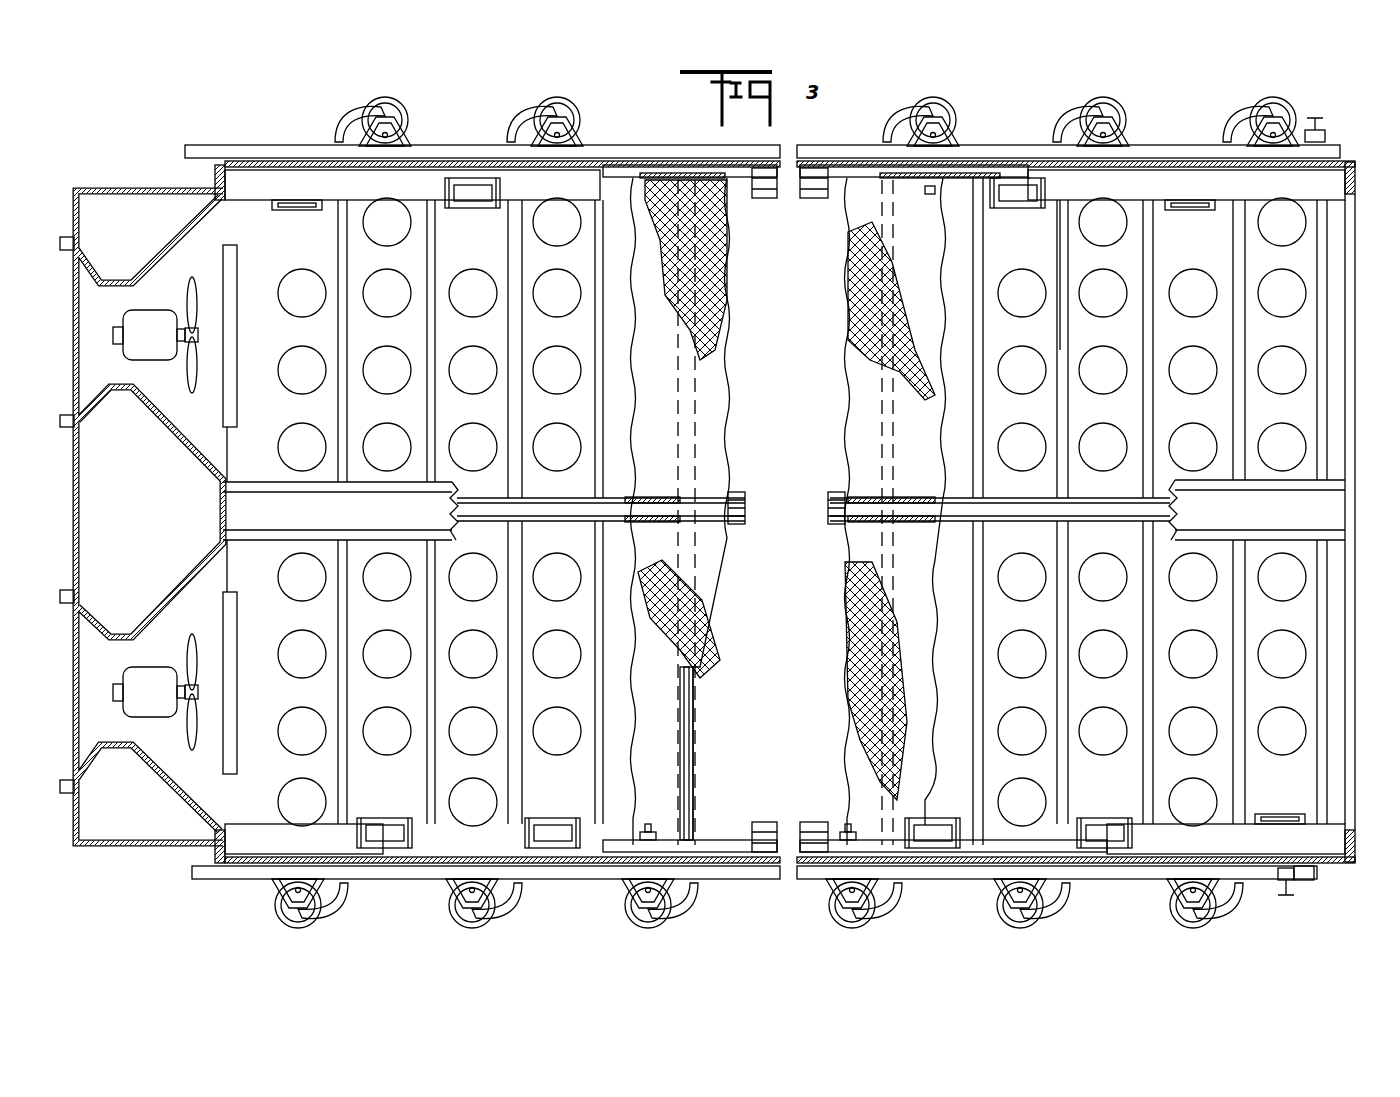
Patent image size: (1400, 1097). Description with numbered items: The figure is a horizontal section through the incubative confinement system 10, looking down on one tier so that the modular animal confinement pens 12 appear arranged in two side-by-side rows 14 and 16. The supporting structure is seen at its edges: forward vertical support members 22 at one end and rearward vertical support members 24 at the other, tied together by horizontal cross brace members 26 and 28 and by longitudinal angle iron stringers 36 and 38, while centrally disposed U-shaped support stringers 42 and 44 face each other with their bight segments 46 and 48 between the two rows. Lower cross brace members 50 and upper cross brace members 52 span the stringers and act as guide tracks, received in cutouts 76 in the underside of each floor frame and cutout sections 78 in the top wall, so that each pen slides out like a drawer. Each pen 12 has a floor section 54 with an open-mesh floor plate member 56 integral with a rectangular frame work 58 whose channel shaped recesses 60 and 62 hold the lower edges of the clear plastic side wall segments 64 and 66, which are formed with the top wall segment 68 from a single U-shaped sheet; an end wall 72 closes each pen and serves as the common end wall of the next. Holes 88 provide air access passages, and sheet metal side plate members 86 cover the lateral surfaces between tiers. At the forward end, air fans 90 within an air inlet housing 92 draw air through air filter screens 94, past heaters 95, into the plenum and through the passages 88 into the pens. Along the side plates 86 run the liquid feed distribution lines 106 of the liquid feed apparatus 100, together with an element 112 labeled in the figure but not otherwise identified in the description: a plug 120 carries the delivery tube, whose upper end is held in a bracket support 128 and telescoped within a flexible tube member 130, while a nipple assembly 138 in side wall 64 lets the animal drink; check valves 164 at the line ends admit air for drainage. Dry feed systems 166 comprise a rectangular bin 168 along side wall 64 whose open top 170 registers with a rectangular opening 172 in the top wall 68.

The incubative confinement system 10 is at (136, 108).
The modular animal confinement pen 12 is at (667, 426).
The side-by-side row 14 is at (1360, 631).
The side-by-side row 16 is at (1360, 332).
The forward vertical support member 22 is at (240, 165).
The rearward vertical support member 24 is at (1356, 162).
The cross brace member 26 is at (215, 460).
The cross brace member 28 is at (1346, 540).
The angle iron stringer 36 is at (770, 182).
The angle iron stringer 38 is at (250, 190).
The U-shaped support stringer 42 is at (803, 476).
The U-shaped support stringer 44 is at (460, 485).
The bight segment 46 is at (752, 510).
The bight segment 48 is at (235, 512).
The lower cross brace member 50 is at (692, 718).
The upper cross brace member 52 is at (345, 350).
The floor section 54 is at (830, 380).
The floor plate member 56 is at (848, 292).
The frame work 58 is at (750, 198).
The channel shaped recess 60 is at (786, 209).
The channel shaped recess 62 is at (785, 512).
The side wall segment 64 is at (680, 173).
The side wall segment 66 is at (655, 496).
The top wall segment 68 is at (312, 538).
The end wall 72 is at (428, 352).
The cutout 76 is at (757, 662).
The cutout section 78 is at (512, 400).
The side plate member 86 is at (598, 145).
The air access passage 88 is at (385, 230).
The air fan 90 is at (183, 362).
The air inlet housing 92 is at (170, 240).
The air filter screen 94 is at (80, 345).
The heater 95 is at (224, 385).
The liquid feed apparatus 100 is at (517, 102).
The distribution line 106 is at (776, 146).
The wheel 112 is at (378, 100).
The plug 120 is at (400, 124).
The bracket support 128 is at (1175, 895).
The flexible tube member 130 is at (340, 138).
The nipple assembly 138 is at (935, 200).
The check valve 164 is at (1318, 128).
The dry feed system 166 is at (310, 221).
The bin 168 is at (480, 208).
The open top 170 is at (475, 195).
The rectangular opening 172 is at (505, 190).